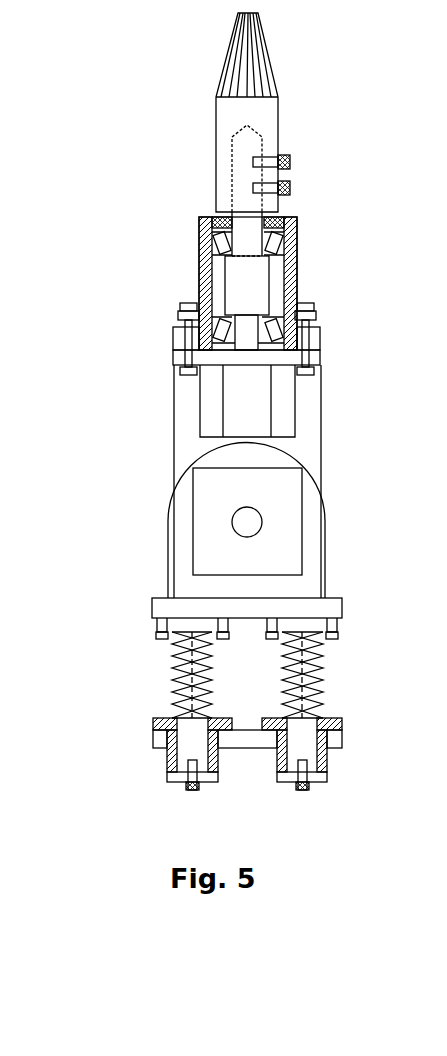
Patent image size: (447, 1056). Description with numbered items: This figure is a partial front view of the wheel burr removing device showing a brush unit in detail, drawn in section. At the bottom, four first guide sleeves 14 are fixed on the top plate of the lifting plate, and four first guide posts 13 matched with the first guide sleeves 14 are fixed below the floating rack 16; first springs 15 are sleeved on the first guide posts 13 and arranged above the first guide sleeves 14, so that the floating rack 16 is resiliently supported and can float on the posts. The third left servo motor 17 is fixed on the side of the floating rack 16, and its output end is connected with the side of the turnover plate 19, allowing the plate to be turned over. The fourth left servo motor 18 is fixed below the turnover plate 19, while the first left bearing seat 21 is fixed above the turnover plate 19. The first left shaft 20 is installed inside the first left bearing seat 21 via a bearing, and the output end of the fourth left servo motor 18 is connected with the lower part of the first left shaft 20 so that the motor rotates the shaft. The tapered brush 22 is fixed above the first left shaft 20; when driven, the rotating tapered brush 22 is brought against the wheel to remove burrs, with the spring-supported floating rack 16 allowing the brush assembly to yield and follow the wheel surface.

The first guide post 13 is at (192, 750).
The first guide sleeve 14 is at (167, 740).
The first spring 15 is at (177, 682).
The floating rack 16 is at (248, 590).
The third left servo motor 17 is at (217, 535).
The fourth left servo motor 18 is at (247, 422).
The turnover plate 19 is at (180, 338).
The first left shaft 20 is at (243, 278).
The first left bearing seat 21 is at (199, 260).
The tapered brush 22 is at (240, 98).